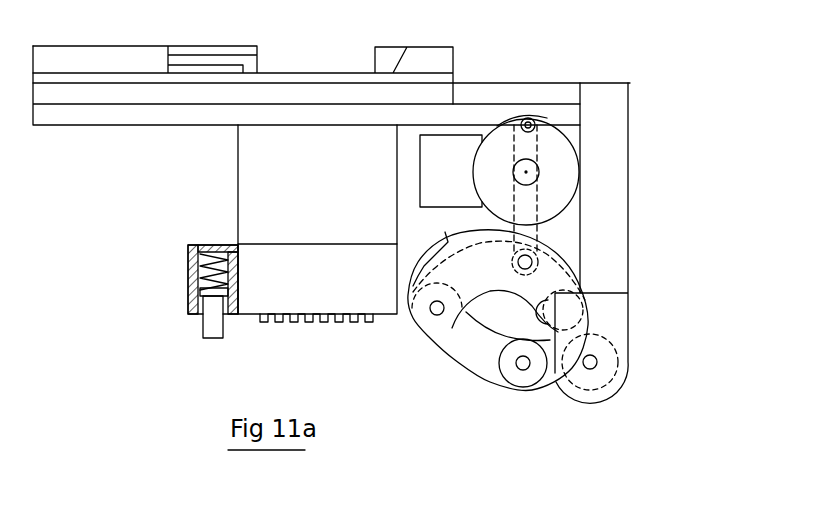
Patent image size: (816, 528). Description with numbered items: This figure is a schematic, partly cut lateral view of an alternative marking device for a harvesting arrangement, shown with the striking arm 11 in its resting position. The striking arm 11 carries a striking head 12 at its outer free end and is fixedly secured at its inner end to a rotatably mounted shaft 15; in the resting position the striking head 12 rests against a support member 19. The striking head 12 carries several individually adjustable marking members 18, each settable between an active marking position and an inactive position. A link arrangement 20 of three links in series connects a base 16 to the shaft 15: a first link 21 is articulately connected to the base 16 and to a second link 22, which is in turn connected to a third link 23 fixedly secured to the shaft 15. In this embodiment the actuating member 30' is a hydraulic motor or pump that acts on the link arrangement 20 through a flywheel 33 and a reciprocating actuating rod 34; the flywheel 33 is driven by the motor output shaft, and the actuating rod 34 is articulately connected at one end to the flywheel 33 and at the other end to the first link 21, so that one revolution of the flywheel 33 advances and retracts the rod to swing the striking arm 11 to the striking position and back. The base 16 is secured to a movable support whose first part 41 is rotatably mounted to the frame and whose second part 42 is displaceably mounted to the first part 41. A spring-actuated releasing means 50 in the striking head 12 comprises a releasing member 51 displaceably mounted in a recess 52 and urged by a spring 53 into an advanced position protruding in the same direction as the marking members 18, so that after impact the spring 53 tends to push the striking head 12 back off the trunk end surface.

The striking arm 11 is at (414, 250).
The striking head 12 is at (252, 305).
The shaft 15 is at (607, 380).
The base 16 is at (622, 262).
The marking members 18 is at (313, 323).
The support member 19 is at (257, 155).
The link arrangement 20 is at (465, 397).
The first link 21 is at (456, 278).
The second link 22 is at (450, 345).
The third link 23 is at (540, 377).
The actuating member 30' is at (468, 115).
The flywheel 33 is at (567, 165).
The actuating rod 34 is at (540, 236).
The first part of the support 41 is at (284, 72).
The second part of the support 42 is at (118, 128).
The releasing means 50 is at (205, 289).
The releasing member 51 is at (212, 332).
The recess 52 is at (190, 264).
The spring 53 is at (235, 272).